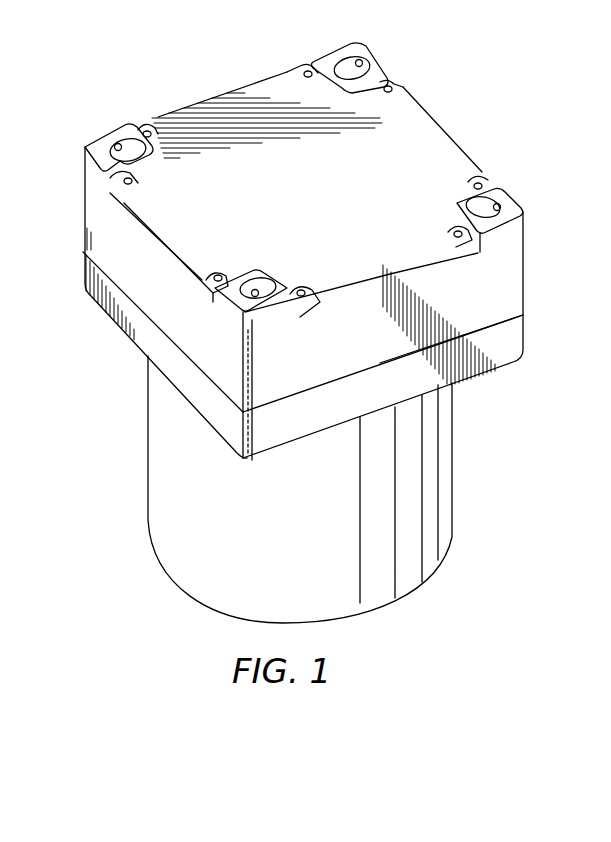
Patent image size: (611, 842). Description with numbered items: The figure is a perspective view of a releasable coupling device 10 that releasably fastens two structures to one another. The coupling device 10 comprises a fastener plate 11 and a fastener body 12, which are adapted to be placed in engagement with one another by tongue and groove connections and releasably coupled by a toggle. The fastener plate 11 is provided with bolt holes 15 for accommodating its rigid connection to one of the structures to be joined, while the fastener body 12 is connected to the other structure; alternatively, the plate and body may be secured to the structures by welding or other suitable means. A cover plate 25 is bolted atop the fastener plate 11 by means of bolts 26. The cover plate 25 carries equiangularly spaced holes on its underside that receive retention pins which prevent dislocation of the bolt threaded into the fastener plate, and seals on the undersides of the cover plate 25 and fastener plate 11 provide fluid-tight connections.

The releasable coupling device 10 is at (442, 98).
The fastener plate 11 is at (507, 280).
The fastener body 12 is at (430, 430).
The holes 15 is at (120, 147).
The cover plate 25 is at (415, 148).
The bolts 26 is at (147, 130).